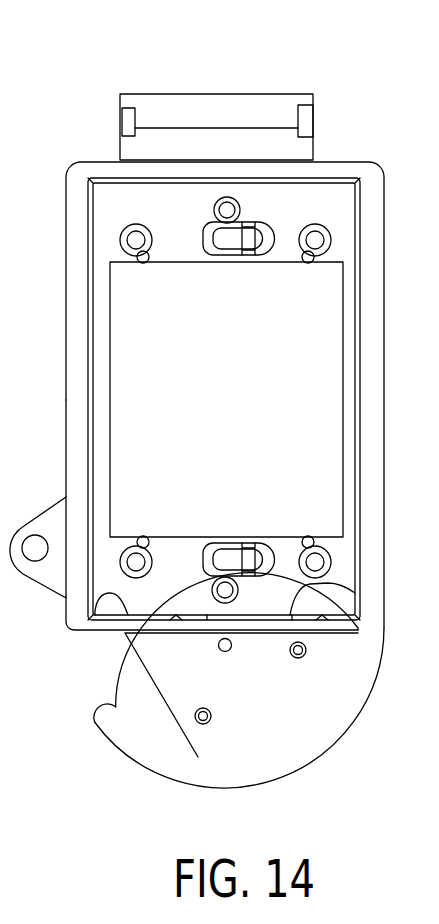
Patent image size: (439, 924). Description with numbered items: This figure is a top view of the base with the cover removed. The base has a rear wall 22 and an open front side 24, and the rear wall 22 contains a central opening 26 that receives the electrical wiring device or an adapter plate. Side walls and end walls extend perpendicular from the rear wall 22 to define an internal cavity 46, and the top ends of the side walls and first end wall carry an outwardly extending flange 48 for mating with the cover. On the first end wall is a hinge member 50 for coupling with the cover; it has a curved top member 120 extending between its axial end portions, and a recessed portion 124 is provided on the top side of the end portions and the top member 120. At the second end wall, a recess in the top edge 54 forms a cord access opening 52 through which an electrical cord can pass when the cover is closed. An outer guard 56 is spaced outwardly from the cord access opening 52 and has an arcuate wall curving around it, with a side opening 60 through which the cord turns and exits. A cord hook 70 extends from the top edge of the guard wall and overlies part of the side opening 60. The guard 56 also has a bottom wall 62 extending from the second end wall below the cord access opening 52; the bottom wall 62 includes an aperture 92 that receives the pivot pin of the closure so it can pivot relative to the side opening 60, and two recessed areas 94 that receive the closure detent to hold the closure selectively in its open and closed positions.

The hinge member 50 is at (219, 88).
The curved top member 120 is at (205, 115).
The recessed portion 124 is at (315, 118).
The rear wall 22 is at (325, 203).
The outwardly extending flange 48 is at (72, 362).
The open front side 24 is at (97, 340).
The central opening 26 is at (110, 455).
The internal cavity 46 is at (307, 415).
The top edge 54 is at (112, 595).
The cord access opening 52 is at (312, 583).
The side opening 60 is at (211, 722).
The outer guard 56 is at (341, 741).
The cord hook 70 is at (148, 768).
The bottom wall 62 is at (180, 697).
The aperture 92 is at (233, 645).
The recessed areas 94 is at (310, 650).